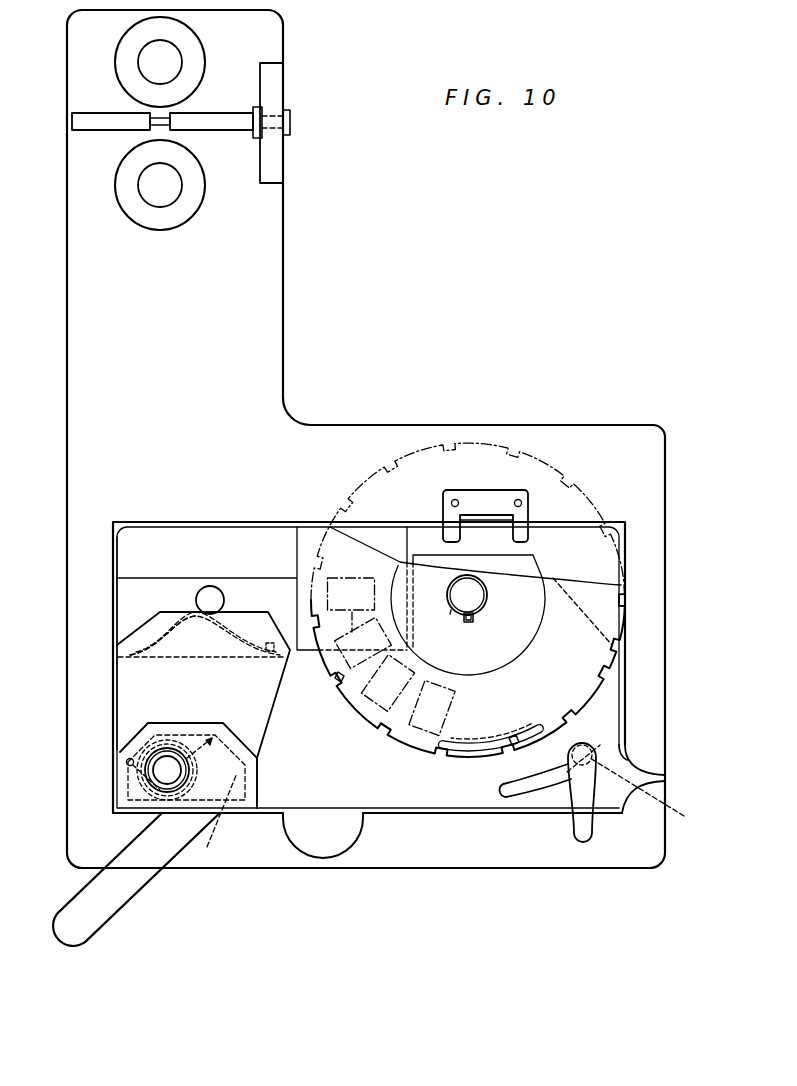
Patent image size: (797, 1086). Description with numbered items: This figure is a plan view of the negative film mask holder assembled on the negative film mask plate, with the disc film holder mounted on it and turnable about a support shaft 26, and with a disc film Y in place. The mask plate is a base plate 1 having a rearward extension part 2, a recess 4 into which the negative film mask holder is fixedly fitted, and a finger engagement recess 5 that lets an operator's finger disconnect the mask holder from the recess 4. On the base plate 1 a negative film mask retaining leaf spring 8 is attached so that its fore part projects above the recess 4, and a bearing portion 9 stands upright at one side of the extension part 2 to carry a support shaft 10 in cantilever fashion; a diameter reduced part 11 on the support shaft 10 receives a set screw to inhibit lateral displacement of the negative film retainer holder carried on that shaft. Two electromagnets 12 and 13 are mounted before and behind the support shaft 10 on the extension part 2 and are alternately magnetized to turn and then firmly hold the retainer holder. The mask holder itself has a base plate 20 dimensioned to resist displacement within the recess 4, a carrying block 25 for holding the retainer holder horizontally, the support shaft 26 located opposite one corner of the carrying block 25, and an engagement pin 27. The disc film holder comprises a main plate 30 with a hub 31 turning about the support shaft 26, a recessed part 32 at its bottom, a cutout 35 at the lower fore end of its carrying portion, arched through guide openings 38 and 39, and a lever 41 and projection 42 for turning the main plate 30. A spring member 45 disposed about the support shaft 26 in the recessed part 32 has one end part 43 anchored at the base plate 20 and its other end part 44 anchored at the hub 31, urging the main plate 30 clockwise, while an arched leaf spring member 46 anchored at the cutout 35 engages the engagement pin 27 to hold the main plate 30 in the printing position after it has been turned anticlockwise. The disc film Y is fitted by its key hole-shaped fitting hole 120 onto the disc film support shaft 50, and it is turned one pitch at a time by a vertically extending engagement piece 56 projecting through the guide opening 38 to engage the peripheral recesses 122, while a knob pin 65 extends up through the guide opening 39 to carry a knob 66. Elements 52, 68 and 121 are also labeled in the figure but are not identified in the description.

The base plate 1 is at (328, 426).
The extension part 2 is at (67, 248).
The recess 4 is at (598, 533).
The finger engagement recess 5 is at (290, 838).
The negative film mask retaining leaf spring 8 is at (487, 497).
The bearing portion 9 is at (277, 97).
The support shaft 10 is at (110, 118).
The diameter reduced part 11 is at (185, 118).
The electromagnet 12 is at (120, 64).
The electromagnet 13 is at (120, 188).
The base plate 20 is at (120, 595).
The carrying block 25 is at (255, 535).
The support shaft 26 is at (160, 776).
The engagement pin 27 is at (213, 596).
The main plate 30 is at (118, 697).
The hub 31 is at (242, 812).
The recessed part 32 is at (215, 819).
The cutout 35 is at (203, 701).
The arched through guide opening 38 is at (447, 752).
The arched through guide opening 39 is at (506, 797).
The lever 41 is at (66, 905).
The projection 42 is at (640, 776).
The one end part 43 is at (127, 760).
The other end part 44 is at (214, 736).
The spring member 45 is at (172, 745).
The spring member 46 is at (183, 655).
The disc film support shaft 50 is at (483, 600).
The key 52 is at (476, 617).
The engagement piece 56 is at (513, 744).
The knob pin 65 is at (635, 790).
The knob 66 is at (576, 820).
The detent 68 is at (338, 678).
The key hole-shaped fitting hole 120 is at (455, 612).
The keyway 121 is at (470, 624).
The recesses 122 is at (387, 724).
The disc film Y is at (583, 683).